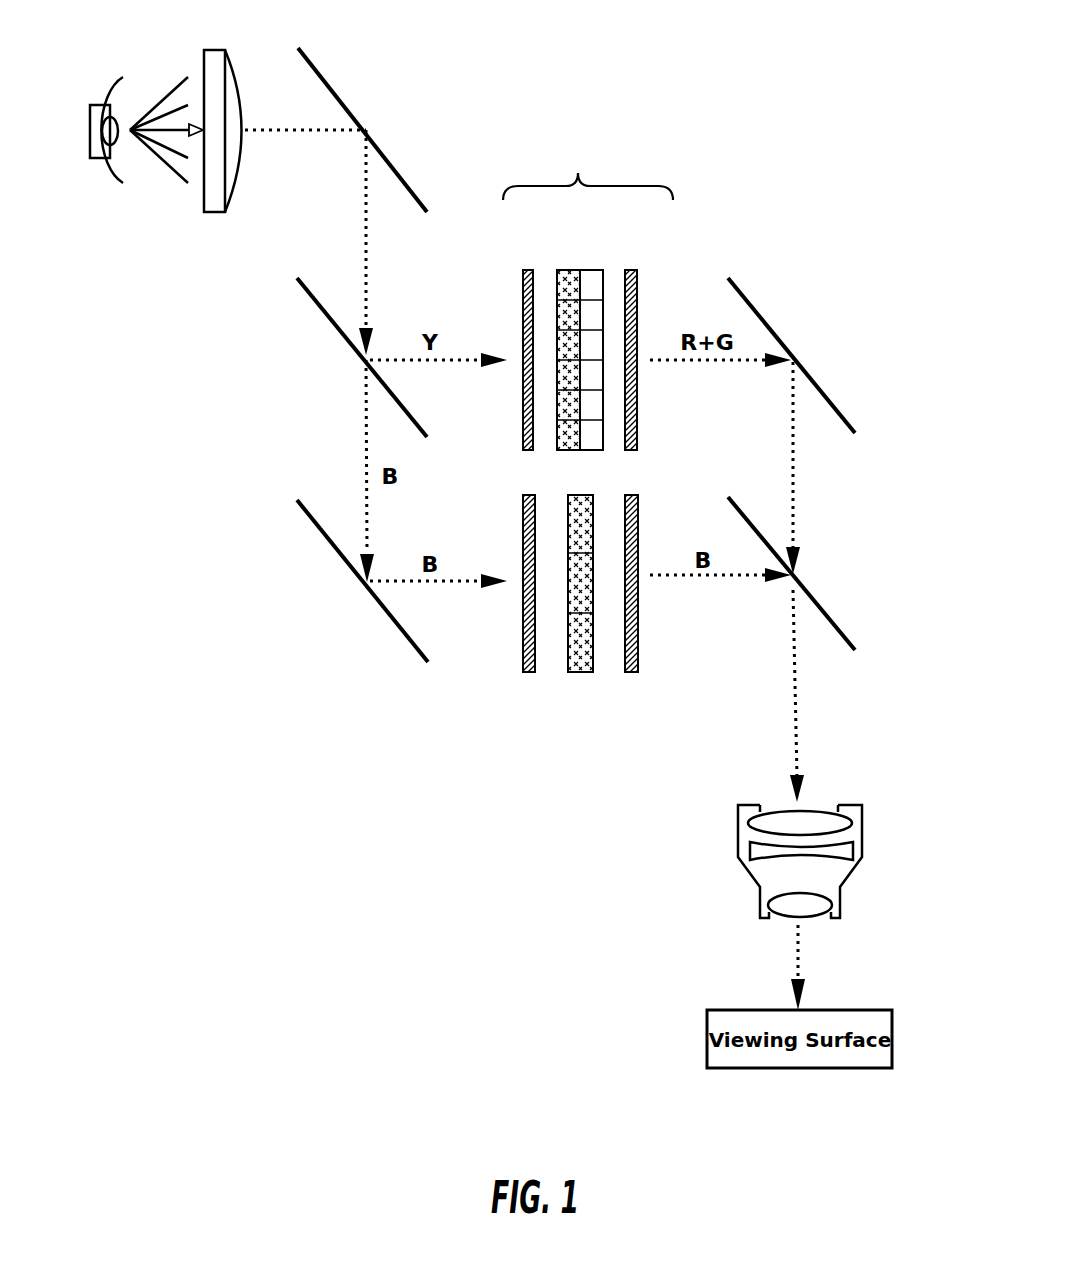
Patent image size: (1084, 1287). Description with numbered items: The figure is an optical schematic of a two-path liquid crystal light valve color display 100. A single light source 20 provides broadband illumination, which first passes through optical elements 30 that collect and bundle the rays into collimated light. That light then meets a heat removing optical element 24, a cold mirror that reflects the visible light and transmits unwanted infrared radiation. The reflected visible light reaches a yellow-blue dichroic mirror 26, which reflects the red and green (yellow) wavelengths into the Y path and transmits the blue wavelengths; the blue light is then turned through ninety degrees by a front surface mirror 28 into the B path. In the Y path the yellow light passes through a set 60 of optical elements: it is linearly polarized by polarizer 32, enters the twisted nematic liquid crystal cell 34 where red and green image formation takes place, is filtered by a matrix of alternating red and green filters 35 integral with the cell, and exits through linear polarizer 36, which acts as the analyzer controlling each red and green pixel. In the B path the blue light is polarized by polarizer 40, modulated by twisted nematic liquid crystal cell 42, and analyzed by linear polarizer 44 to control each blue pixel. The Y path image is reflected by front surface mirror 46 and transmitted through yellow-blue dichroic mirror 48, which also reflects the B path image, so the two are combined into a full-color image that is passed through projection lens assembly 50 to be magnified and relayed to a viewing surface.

The two-path liquid crystal light valve color display 100 is at (764, 76).
The light source 20 is at (104, 188).
The optical elements 30 is at (215, 49).
The heat removing optical element 24 is at (337, 93).
The yellow-blue dichroic mirror 26 is at (327, 313).
The front surface mirror 28 is at (322, 537).
The set of optical elements 60 is at (588, 297).
The polarizer 32 is at (527, 268).
The twisted nematic liquid crystal cell 34 is at (570, 268).
The red and green filters 35 is at (590, 268).
The linear polarizer 36 is at (633, 268).
The polarizer 40 is at (527, 493).
The twisted nematic liquid crystal cell 42 is at (583, 674).
The linear polarizer 44 is at (634, 493).
The front surface mirror 46 is at (768, 322).
The yellow-blue dichroic mirror 48 is at (818, 600).
The projection lens assembly 50 is at (733, 819).